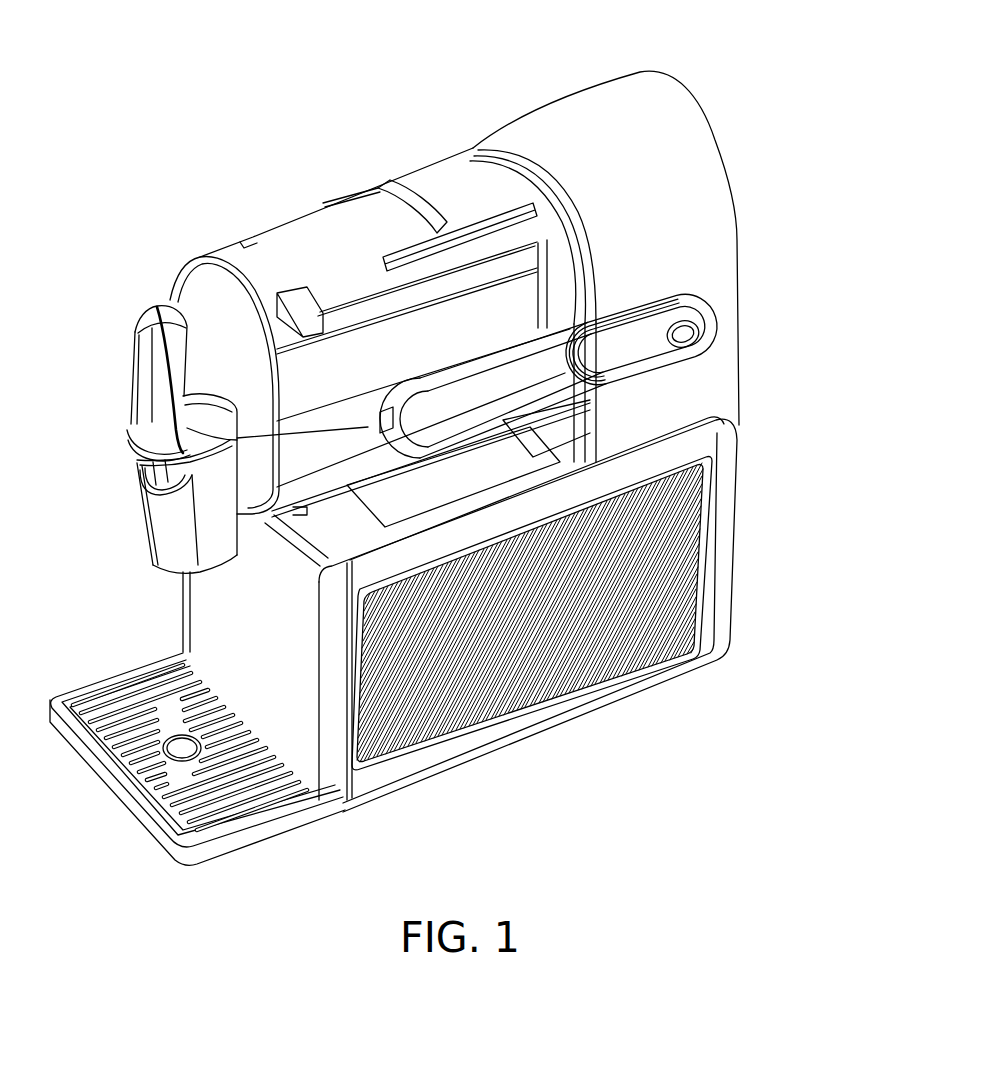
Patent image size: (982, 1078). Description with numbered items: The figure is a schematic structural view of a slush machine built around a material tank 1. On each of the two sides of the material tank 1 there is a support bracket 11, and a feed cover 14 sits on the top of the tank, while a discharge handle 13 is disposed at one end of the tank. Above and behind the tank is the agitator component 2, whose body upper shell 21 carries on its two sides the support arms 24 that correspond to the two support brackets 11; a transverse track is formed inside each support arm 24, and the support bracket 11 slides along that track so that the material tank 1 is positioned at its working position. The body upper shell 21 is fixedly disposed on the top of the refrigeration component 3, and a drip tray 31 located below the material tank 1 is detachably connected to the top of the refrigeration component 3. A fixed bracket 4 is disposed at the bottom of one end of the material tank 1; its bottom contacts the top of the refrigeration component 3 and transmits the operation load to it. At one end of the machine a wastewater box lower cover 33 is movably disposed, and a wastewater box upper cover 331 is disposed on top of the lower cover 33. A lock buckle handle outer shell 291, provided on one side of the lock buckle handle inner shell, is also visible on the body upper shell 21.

The material tank 1 is at (354, 237).
The agitator component 2 is at (548, 88).
The feed cover 14 is at (455, 176).
The body upper shell 21 is at (661, 195).
The support arm 24 is at (489, 389).
The lock buckle handle outer shell 291 is at (648, 329).
The discharge handle 13 is at (125, 378).
The support bracket 11 is at (374, 430).
The fixed bracket 4 is at (257, 524).
The refrigeration component 3 is at (439, 784).
The drip tray 31 is at (746, 497).
The wastewater box lower cover 33 is at (283, 837).
The wastewater box upper cover 331 is at (195, 808).